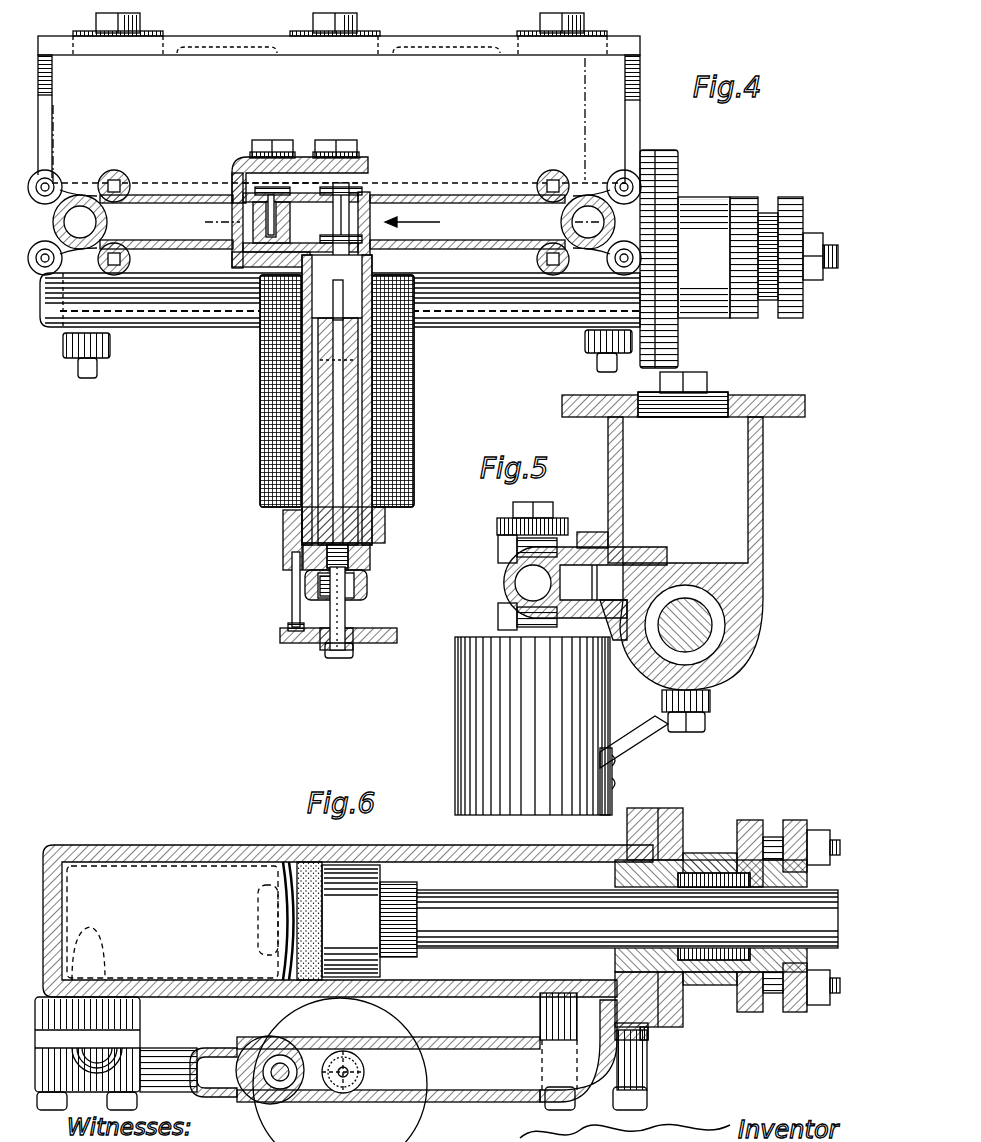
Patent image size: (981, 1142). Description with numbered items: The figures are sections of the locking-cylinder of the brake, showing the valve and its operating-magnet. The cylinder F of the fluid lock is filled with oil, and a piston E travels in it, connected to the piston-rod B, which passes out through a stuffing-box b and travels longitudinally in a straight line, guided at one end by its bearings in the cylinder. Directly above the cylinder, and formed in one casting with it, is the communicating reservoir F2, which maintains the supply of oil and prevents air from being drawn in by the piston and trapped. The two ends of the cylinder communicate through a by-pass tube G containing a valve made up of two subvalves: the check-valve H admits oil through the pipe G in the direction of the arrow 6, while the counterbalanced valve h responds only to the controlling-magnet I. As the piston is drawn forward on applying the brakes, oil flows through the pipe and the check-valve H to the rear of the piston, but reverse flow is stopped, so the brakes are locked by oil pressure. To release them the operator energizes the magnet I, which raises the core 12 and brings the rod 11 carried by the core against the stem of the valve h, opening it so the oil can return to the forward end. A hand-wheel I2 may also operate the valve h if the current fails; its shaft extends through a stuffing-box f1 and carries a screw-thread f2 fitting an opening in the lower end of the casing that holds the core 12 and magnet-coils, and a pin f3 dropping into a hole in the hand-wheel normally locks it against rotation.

In FIG. 4, the communicating reservoir F2 is at (339, 123).
In FIG. 5, the communicating reservoir F2 is at (683, 531).
In FIG. 4, the cylinder of the fluid lock F is at (439, 264).
In FIG. 6, the cylinder of the fluid lock F is at (348, 908).
In FIG. 4, the by-pass tube G is at (334, 222).
In FIG. 5, the by-pass tube G is at (521, 587).
In FIG. 6, the by-pass tube G is at (487, 1060).
In FIG. 4, the check-valve H is at (277, 215).
In FIG. 4, the counterbalanced valve h is at (341, 230).
In FIG. 6, the counterbalanced valve h is at (364, 1072).
In FIG. 4, the arrow 6 is at (412, 215).
In FIG. 4, the controlling-magnet I is at (343, 400).
In FIG. 5, the controlling-magnet I is at (532, 726).
In FIG. 4, the rod 11 is at (340, 312).
In FIG. 4, the core 12 is at (355, 517).
In FIG. 4, the screw-thread f2 is at (370, 558).
In FIG. 4, the stuffing-box f1 is at (368, 582).
In FIG. 4, the pin f3 is at (292, 610).
In FIG. 4, the hand-wheel I2 is at (370, 628).
In FIG. 5, the piston E is at (685, 614).
In FIG. 6, the piston E is at (337, 921).
In FIG. 5, the piston-rod B is at (685, 625).
In FIG. 6, the piston-rod B is at (627, 919).
In FIG. 6, the stuffing-box b is at (727, 924).